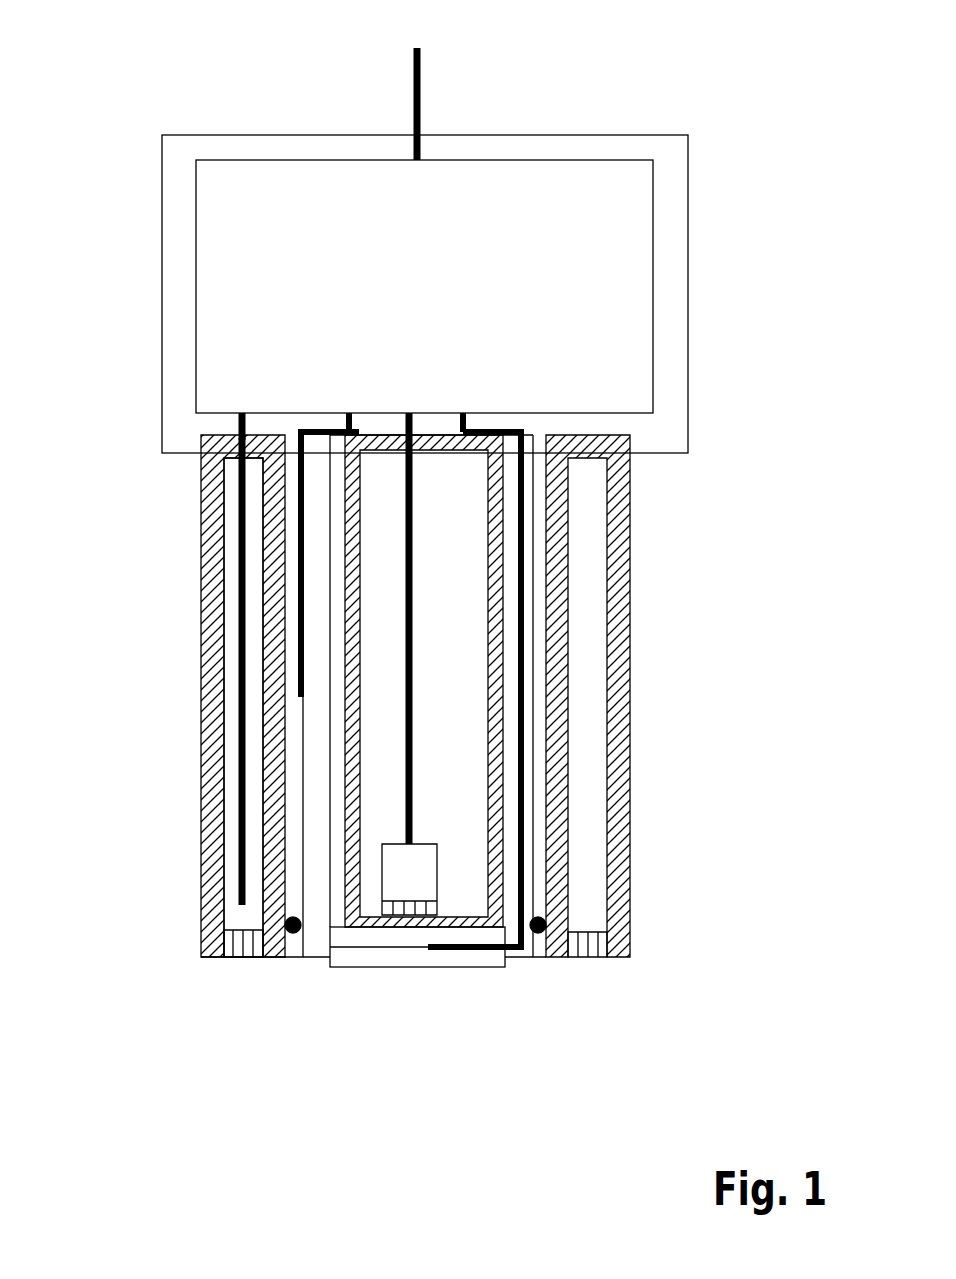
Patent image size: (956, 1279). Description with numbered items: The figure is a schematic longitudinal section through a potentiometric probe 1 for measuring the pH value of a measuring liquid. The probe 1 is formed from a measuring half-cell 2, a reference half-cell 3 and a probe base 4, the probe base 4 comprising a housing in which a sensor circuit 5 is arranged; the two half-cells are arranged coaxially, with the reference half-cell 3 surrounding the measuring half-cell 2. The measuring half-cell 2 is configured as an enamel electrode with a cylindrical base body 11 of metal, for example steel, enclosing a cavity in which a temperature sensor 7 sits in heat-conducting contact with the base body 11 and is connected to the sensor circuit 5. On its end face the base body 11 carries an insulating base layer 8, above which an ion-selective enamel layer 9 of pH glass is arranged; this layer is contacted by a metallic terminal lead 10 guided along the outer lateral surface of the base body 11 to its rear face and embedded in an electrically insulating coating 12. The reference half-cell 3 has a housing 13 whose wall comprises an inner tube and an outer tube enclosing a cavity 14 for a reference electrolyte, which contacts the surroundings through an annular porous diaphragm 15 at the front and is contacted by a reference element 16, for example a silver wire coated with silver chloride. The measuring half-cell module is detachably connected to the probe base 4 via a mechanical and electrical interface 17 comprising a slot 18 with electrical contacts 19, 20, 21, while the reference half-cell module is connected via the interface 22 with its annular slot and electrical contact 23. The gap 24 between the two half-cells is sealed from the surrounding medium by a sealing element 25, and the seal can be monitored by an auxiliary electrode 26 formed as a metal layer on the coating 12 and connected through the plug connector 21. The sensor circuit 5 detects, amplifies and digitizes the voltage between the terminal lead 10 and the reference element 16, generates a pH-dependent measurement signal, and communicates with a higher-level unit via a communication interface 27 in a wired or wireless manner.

The potentiometric probe 1 is at (698, 69).
The measuring half-cell 2 is at (407, 990).
The reference half-cell 3 is at (648, 995).
The probe base 4 is at (689, 268).
The sensor circuit 5 is at (577, 187).
The temperature sensor 7 is at (415, 870).
The base layer 8 is at (485, 935).
The ion-selective enamel layer 9 is at (440, 968).
The terminal lead 10 is at (521, 955).
The base body 11 is at (505, 734).
The coating 12 is at (526, 658).
The housing 13 is at (205, 920).
The cavity 14 is at (230, 860).
The diaphragm 15 is at (240, 962).
The reference element 16 is at (238, 790).
The mechanical and electrical interface 17 is at (450, 410).
The slot 18 is at (546, 438).
The electrical contact 19 is at (463, 416).
The electrical contact 20 is at (410, 413).
The electrical contact 21 is at (349, 413).
The mechanical and electrical interface 22 is at (194, 425).
The electrical contact 23 is at (238, 413).
The gap 24 is at (292, 672).
The sealing element 25 is at (293, 960).
The auxiliary electrode 26 is at (298, 580).
The communication interface 27 is at (416, 76).